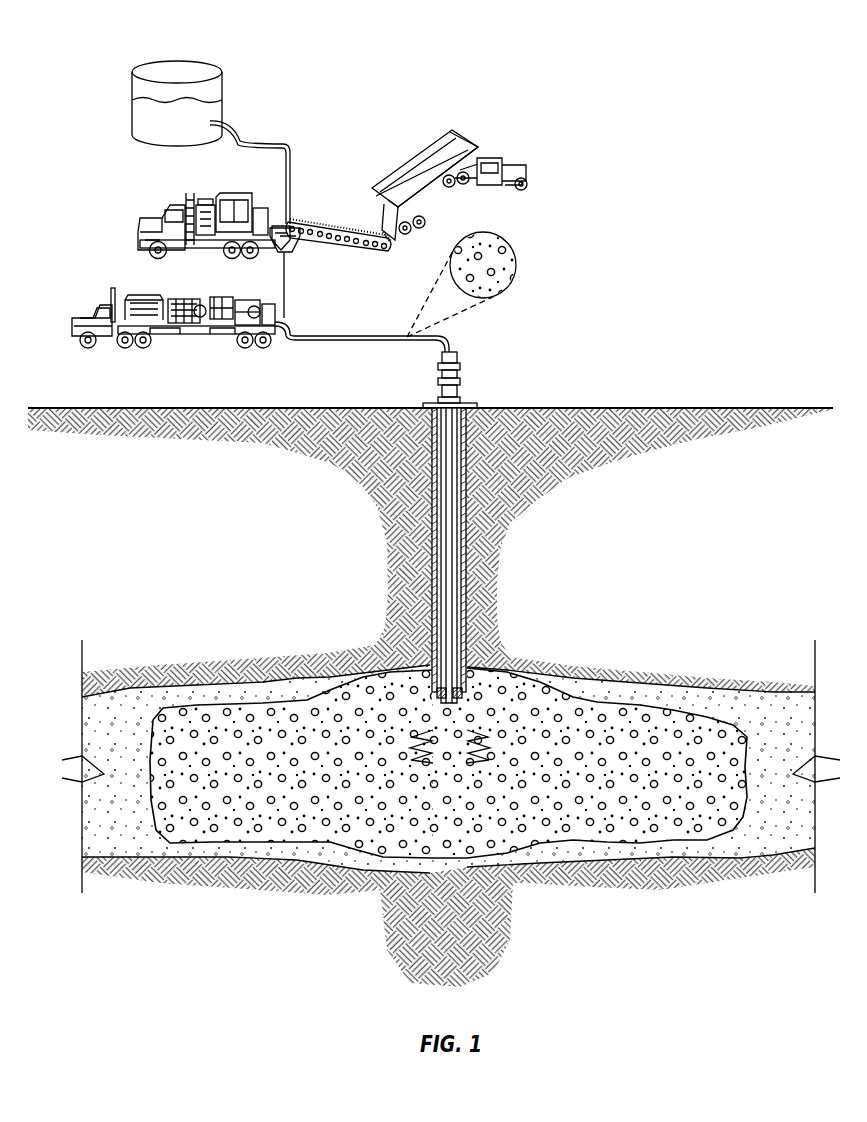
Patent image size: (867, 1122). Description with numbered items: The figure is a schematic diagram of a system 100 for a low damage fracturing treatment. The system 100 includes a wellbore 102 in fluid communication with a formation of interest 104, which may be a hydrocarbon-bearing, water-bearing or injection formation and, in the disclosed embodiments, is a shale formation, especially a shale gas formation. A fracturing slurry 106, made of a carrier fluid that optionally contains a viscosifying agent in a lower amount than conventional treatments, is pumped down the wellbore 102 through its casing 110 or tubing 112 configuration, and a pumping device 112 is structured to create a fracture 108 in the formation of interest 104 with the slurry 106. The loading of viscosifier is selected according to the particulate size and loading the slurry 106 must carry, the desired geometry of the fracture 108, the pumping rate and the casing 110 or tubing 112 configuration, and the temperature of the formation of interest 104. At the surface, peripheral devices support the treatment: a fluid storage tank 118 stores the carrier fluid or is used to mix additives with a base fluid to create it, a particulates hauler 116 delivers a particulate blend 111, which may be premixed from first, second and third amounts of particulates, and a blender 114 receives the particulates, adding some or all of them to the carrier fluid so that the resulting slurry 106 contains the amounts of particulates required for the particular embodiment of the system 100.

The system 100 is at (585, 65).
The wellbore 102 is at (476, 392).
The formation of interest 104 is at (680, 690).
The fracturing slurry 106 is at (517, 262).
The fracture 108 is at (603, 690).
The casing 110 is at (470, 606).
The particulate blend 111 is at (433, 150).
The pumping device 112 is at (460, 462).
The blender 114 is at (232, 192).
The particulates hauler 116 is at (490, 150).
The fluid storage tank 118 is at (176, 62).